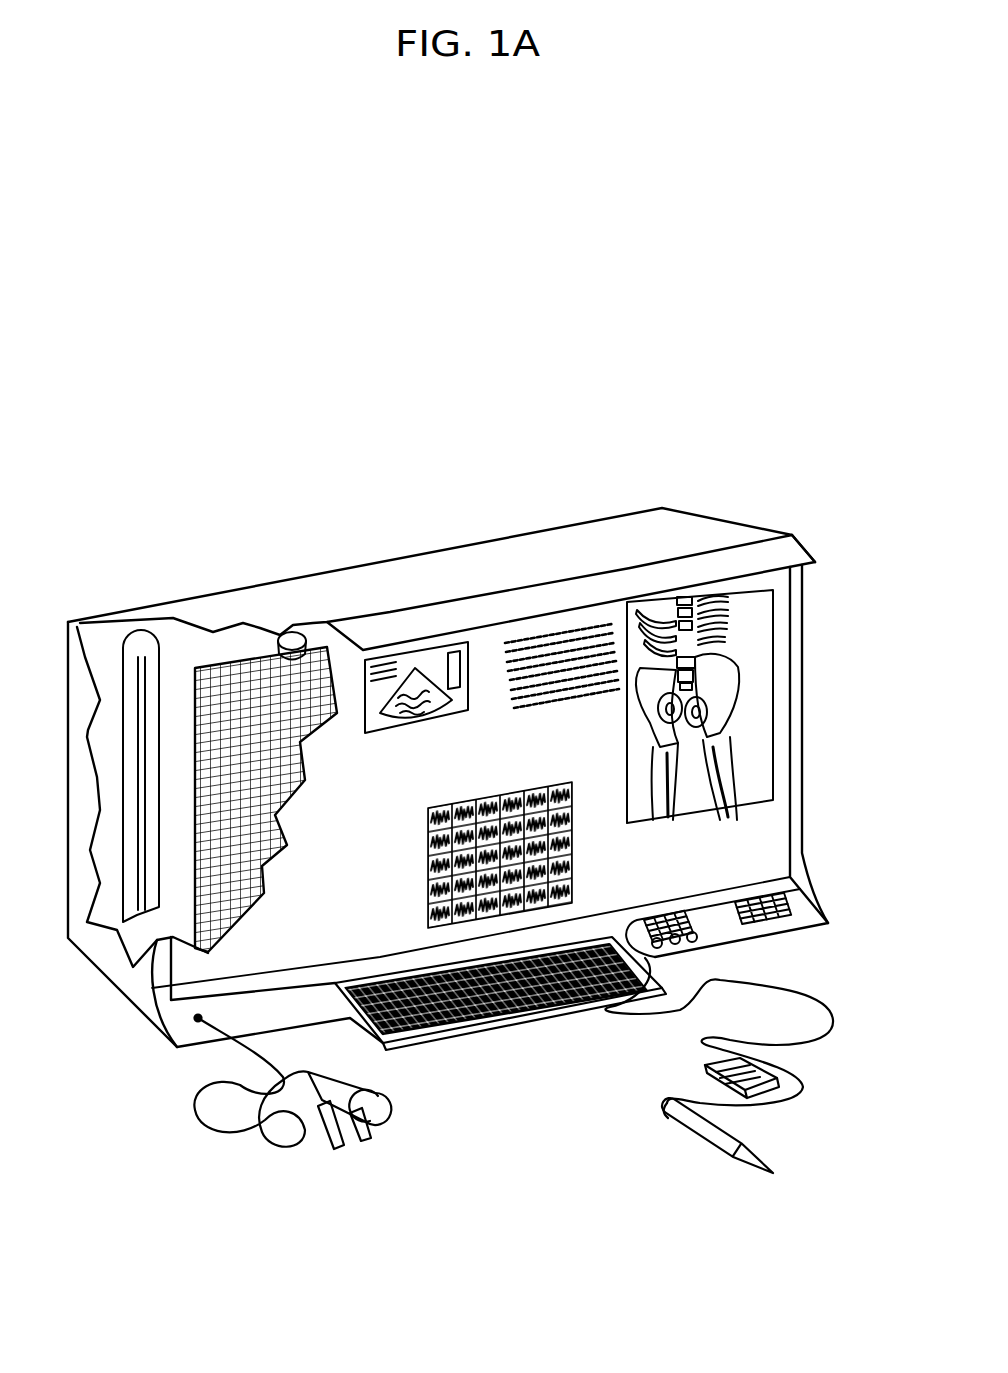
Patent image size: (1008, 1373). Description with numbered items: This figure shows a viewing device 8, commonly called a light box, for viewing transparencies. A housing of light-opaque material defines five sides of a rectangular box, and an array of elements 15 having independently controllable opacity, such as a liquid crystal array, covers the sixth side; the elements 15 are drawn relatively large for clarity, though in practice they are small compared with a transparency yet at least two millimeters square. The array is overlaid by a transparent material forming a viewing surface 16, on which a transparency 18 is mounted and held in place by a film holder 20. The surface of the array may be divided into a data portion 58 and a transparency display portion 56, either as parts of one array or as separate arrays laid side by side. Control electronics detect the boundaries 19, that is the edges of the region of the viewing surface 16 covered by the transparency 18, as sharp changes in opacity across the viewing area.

The viewing device 8 is at (126, 582).
The elements 15 is at (213, 687).
The viewing surface 16 is at (232, 963).
The transparency 18 is at (760, 600).
The boundaries 19 is at (622, 762).
The film holder 20 is at (288, 703).
The transparency display portion 56 is at (770, 843).
The data portion 58 is at (415, 667).